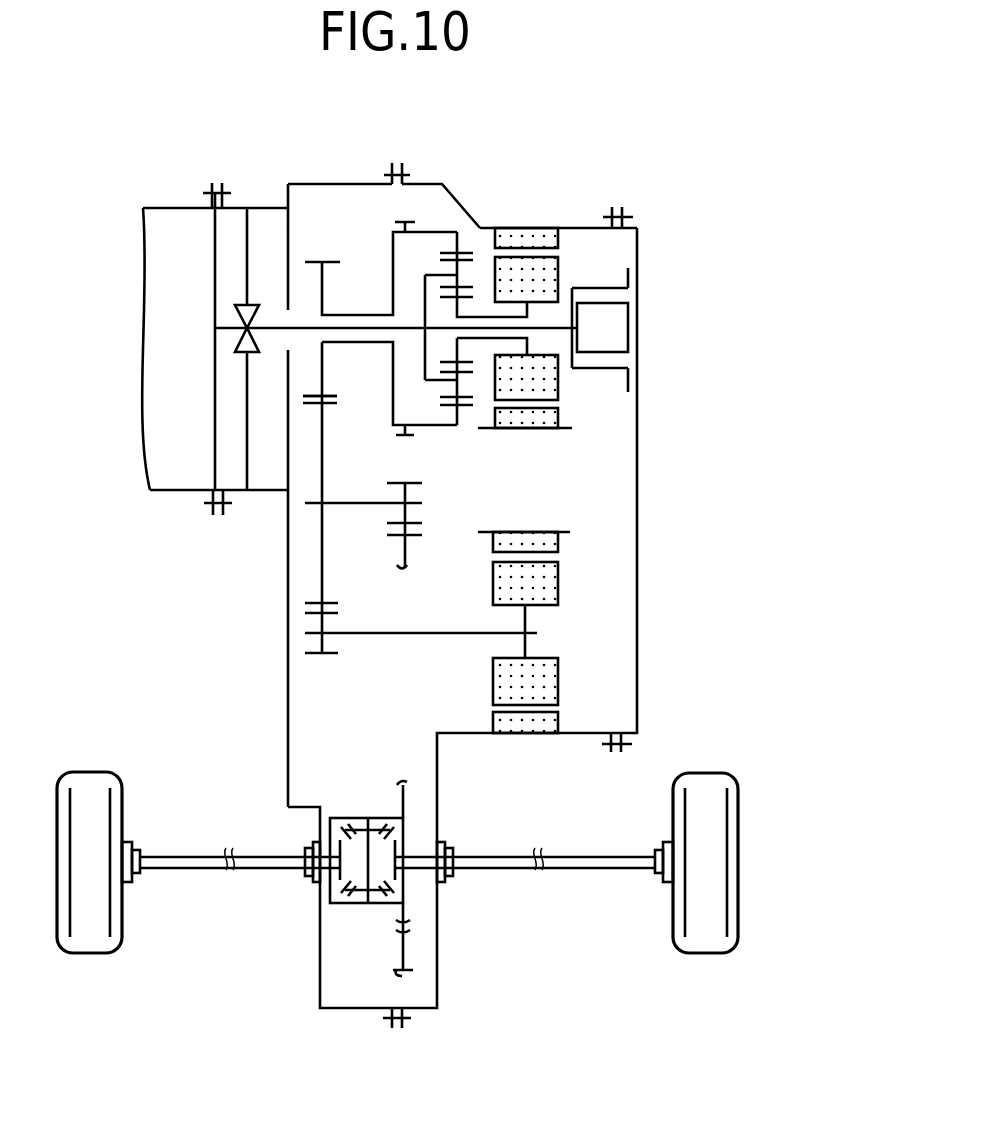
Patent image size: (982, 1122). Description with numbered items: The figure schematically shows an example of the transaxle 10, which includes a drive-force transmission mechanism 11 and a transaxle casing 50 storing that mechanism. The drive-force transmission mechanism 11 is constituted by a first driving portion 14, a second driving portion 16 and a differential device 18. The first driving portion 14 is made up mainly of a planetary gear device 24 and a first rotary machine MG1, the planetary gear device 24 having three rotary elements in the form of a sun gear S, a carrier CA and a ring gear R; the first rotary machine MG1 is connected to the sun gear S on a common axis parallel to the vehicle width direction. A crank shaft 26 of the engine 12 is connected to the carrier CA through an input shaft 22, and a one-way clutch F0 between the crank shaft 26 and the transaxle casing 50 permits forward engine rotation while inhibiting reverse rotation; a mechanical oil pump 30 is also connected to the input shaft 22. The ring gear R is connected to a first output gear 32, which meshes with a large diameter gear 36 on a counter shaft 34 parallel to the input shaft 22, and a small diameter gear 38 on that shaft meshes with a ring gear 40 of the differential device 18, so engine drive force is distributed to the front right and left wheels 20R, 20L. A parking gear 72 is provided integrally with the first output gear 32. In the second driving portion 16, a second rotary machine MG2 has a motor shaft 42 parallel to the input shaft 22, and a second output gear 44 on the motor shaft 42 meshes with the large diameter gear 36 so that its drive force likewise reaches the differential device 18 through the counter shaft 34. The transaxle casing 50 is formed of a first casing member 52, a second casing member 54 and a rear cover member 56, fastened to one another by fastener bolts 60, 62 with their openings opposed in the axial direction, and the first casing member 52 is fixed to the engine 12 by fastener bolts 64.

The transaxle 10 is at (262, 150).
The drive-force transmission mechanism 11 is at (432, 203).
The engine 12 is at (155, 427).
The first driving portion 14 is at (343, 240).
The second driving portion 16 is at (380, 660).
The differential device 18 is at (343, 915).
The front right wheel 20R is at (89, 940).
The front left wheel 20L is at (704, 940).
The input shaft 22 is at (282, 333).
The planetary gear device 24 is at (462, 300).
The crank shaft 26 is at (222, 328).
The mechanical oil pump 30 is at (615, 323).
The first output gear 32 is at (306, 400).
The counter shaft 34 is at (358, 505).
The large diameter gear 36 is at (336, 403).
The small diameter gear 38 is at (412, 483).
The ring gear of the differential device 40 is at (420, 528).
The motor shaft 42 is at (447, 636).
The second output gear 44 is at (305, 653).
The transaxle casing 50 is at (489, 563).
The first casing member 52 is at (330, 183).
The second casing member 54 is at (579, 228).
The rear cover member 56 is at (637, 612).
The fastener bolt 60 is at (388, 175).
The fastener bolt 62 is at (624, 216).
The fastener bolt 64 is at (205, 193).
The parking gear 72 is at (402, 220).
The one-way clutch F0 is at (256, 349).
The carrier CA is at (425, 285).
The sun gear S is at (442, 367).
The ring gear R is at (442, 403).
The first rotary machine MG1 is at (583, 400).
The second rotary machine MG2 is at (575, 580).